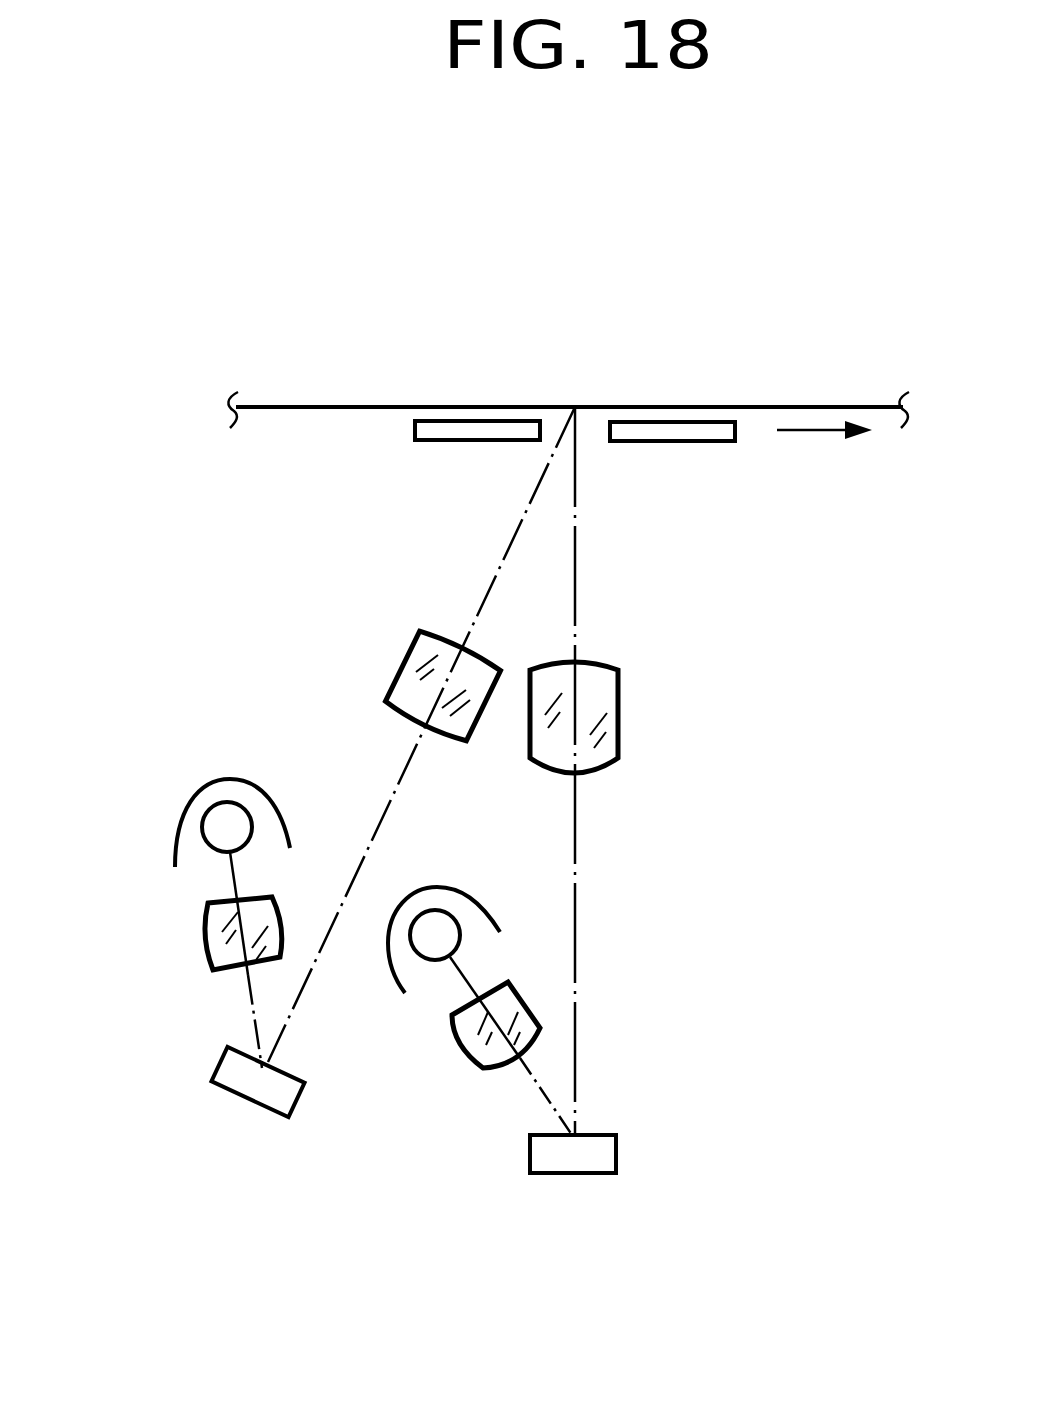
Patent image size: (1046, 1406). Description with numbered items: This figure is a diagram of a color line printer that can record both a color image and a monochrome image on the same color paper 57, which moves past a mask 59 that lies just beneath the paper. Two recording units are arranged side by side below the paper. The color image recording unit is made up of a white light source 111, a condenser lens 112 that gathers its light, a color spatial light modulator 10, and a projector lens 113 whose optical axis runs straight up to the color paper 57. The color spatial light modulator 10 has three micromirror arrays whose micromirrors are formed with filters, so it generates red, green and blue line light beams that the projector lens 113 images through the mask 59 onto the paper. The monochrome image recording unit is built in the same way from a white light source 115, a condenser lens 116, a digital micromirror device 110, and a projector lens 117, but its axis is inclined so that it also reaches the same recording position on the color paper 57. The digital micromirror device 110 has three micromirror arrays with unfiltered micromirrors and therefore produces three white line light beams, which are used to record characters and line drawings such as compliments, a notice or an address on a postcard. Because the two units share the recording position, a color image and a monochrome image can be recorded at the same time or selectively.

The color spatial light modulator 10 is at (572, 1160).
The color paper 57 is at (362, 405).
The mask 59 is at (470, 441).
The digital micromirror device 110 is at (265, 1090).
The white light source 111 is at (444, 925).
The condenser lens 112 is at (481, 1068).
The projector lens 113 is at (618, 677).
The white light source 115 is at (226, 832).
The condenser lens 116 is at (205, 913).
The projector lens 117 is at (415, 670).